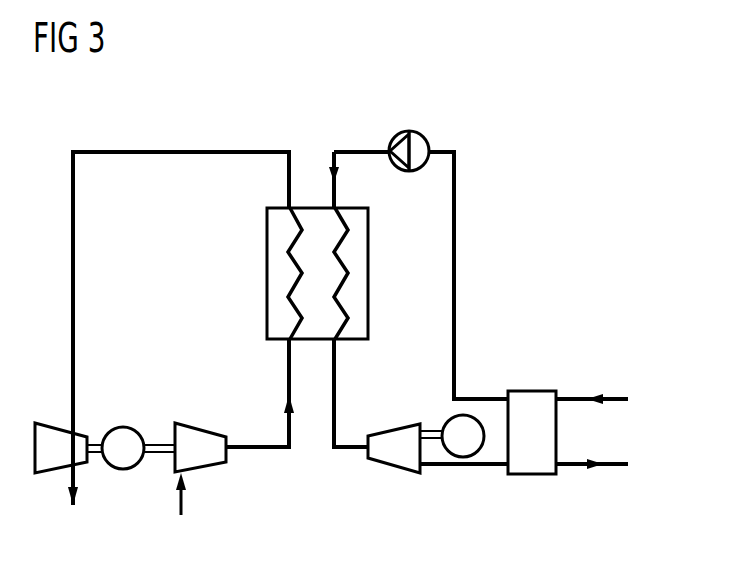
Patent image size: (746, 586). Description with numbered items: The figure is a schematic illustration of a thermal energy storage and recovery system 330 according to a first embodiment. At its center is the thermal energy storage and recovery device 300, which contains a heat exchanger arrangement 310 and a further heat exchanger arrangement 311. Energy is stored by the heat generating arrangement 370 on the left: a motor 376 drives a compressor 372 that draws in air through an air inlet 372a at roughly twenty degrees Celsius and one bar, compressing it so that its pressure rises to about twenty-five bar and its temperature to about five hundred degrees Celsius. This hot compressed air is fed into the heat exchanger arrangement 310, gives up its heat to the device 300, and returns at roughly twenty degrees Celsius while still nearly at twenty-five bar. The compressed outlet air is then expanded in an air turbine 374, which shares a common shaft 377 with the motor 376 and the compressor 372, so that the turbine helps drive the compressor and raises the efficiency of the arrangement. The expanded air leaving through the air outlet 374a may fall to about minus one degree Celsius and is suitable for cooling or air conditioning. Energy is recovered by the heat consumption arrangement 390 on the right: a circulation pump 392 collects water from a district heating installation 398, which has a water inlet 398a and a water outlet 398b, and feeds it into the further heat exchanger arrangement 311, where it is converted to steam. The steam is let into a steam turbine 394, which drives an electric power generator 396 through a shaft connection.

The thermal energy storage and recovery device 300 is at (274, 282).
The heat exchanger arrangement 310 is at (292, 238).
The further heat exchanger arrangement 311 is at (342, 240).
The thermal energy storage and recovery system 330 is at (613, 180).
The heat generating arrangement 370 is at (302, 120).
The compressor 372 is at (205, 427).
The air inlet 372a is at (182, 515).
The air turbine 374 is at (57, 426).
The air outlet 374a is at (78, 483).
The motor 376 is at (124, 470).
The common shaft 377 is at (162, 440).
The heat consumption arrangement 390 is at (627, 120).
The circulation pump 392 is at (417, 172).
The steam turbine 394 is at (395, 468).
The electric power generator 396 is at (463, 458).
The district heating installation 398 is at (530, 476).
The water inlet 398a is at (614, 395).
The water outlet 398b is at (620, 470).